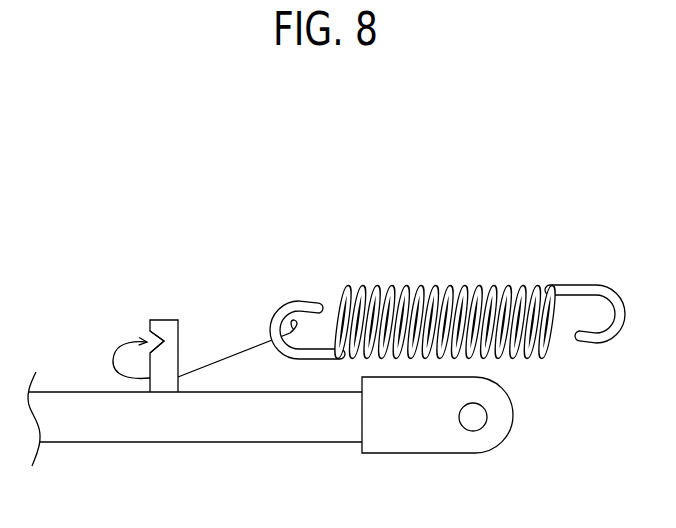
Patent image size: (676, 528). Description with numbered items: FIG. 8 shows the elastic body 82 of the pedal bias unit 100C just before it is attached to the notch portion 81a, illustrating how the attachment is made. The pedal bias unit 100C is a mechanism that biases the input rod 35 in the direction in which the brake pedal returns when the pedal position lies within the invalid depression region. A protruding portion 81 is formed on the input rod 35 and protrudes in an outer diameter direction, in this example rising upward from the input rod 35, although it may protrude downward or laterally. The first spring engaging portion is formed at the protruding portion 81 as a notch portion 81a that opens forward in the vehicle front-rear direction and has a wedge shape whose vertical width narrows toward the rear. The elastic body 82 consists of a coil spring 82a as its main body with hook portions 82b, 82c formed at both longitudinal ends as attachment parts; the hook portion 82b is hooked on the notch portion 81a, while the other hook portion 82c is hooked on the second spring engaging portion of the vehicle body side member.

The pedal bias unit 100C is at (405, 135).
The input rod 35 is at (265, 423).
The protruding portion 81 is at (171, 322).
The notch portion 81a is at (150, 334).
The elastic body 82 is at (476, 270).
The coil spring 82a is at (397, 289).
The hook portion 82b is at (303, 297).
The hook portion 82c is at (618, 290).